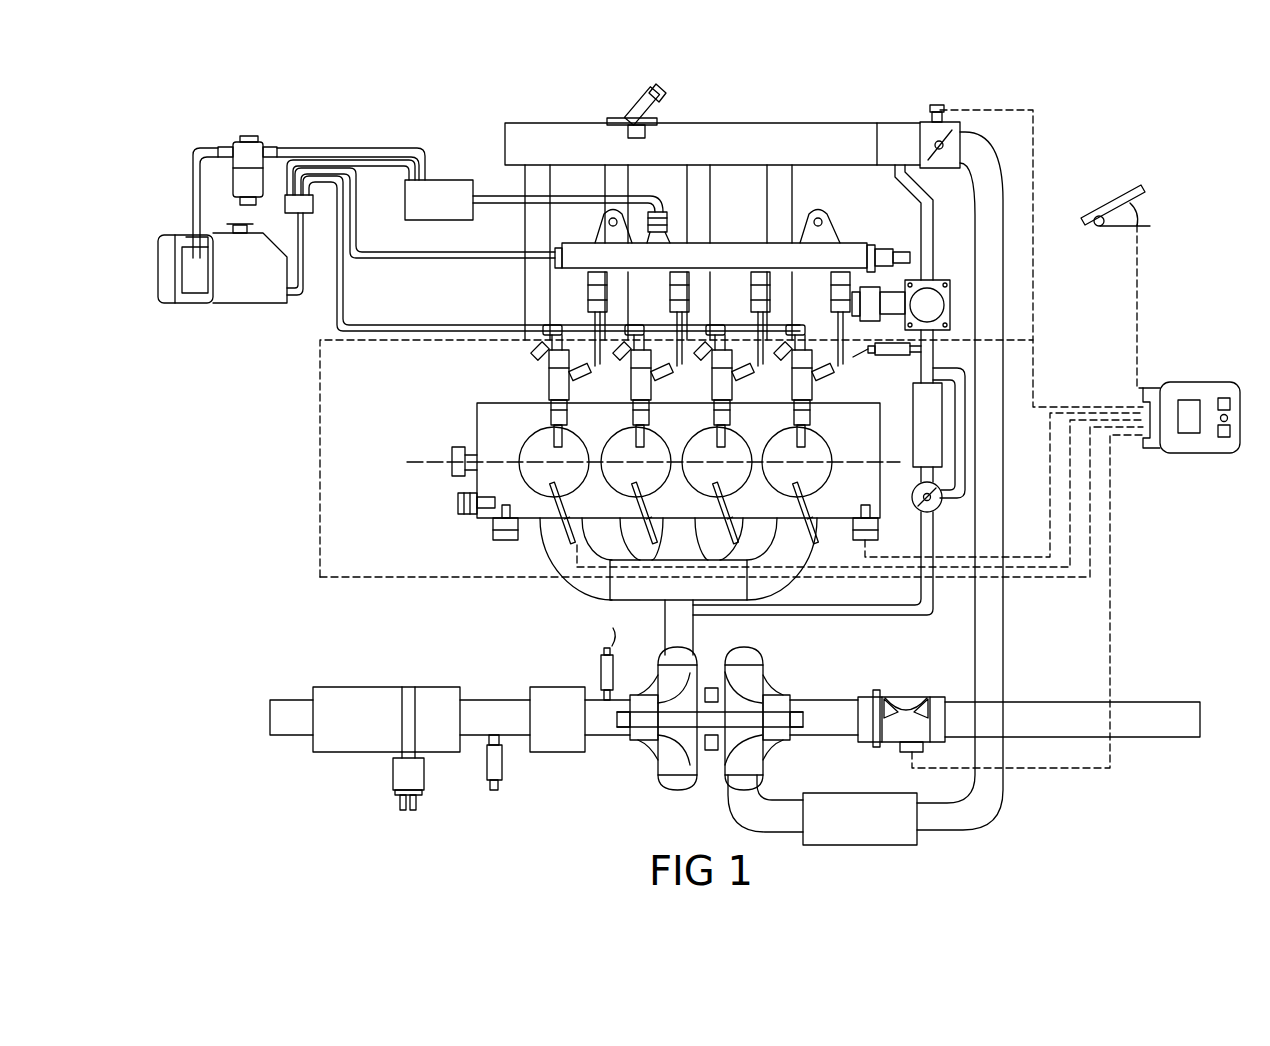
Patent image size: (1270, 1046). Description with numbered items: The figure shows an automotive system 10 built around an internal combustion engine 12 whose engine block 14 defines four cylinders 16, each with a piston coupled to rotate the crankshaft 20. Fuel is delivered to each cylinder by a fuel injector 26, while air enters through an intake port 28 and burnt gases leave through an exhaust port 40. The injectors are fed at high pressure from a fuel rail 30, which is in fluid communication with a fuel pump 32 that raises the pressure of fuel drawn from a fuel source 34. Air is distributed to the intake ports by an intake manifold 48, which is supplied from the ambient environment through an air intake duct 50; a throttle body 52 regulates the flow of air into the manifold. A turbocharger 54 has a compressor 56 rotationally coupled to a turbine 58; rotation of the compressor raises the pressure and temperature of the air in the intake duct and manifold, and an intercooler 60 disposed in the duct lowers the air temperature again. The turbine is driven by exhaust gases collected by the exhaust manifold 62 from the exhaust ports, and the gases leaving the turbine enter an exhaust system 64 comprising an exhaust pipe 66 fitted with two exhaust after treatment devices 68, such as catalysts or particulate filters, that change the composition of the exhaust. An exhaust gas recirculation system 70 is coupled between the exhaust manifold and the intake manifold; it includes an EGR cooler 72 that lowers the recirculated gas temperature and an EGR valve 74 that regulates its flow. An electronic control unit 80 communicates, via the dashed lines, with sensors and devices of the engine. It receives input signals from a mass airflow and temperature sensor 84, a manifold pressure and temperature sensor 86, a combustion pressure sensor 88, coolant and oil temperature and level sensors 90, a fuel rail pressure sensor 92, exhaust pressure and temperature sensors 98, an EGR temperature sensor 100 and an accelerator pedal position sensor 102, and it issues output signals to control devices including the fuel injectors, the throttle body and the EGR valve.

The automotive system 10 is at (410, 128).
The internal combustion engine 12 is at (855, 100).
The engine block 14 is at (477, 430).
The cylinder 16 is at (580, 486).
The crankshaft 20 is at (473, 468).
The fuel injector 26 is at (557, 380).
The intake port 28 is at (538, 400).
The fuel rail 30 is at (577, 262).
The fuel pump 32 is at (428, 211).
The fuel source 34 is at (236, 279).
The exhaust port 40 is at (540, 523).
The intake manifold 48 is at (678, 158).
The air intake duct 50 is at (996, 628).
The throttle body 52 is at (940, 105).
The turbocharger 54 is at (706, 747).
The compressor 56 is at (748, 762).
The turbine 58 is at (677, 757).
The intercooler 60 is at (848, 829).
The exhaust manifold 62 is at (678, 580).
The exhaust system 64 is at (318, 668).
The exhaust pipe 66 is at (280, 717).
The exhaust after treatment device 68 is at (341, 729).
The exhaust gas recirculation system 70 is at (865, 622).
The EGR cooler 72 is at (940, 435).
The EGR valve 74 is at (950, 292).
The electronic control unit 80 is at (1198, 382).
The mass airflow and temperature sensor 84 is at (898, 718).
The manifold pressure and temperature sensor 86 is at (630, 115).
The combustion pressure sensor 88 is at (563, 540).
The coolant and oil temperature and level sensors 90 is at (495, 536).
The fuel rail pressure sensor 92 is at (910, 253).
The exhaust pressure and temperature sensors 98 is at (490, 796).
The EGR temperature sensor 100 is at (950, 348).
The accelerator pedal position sensor 102 is at (1113, 207).